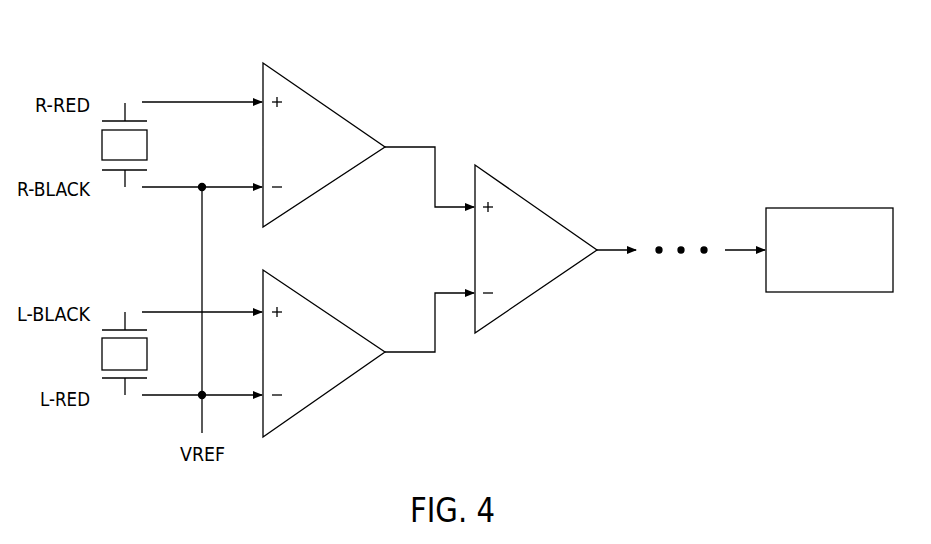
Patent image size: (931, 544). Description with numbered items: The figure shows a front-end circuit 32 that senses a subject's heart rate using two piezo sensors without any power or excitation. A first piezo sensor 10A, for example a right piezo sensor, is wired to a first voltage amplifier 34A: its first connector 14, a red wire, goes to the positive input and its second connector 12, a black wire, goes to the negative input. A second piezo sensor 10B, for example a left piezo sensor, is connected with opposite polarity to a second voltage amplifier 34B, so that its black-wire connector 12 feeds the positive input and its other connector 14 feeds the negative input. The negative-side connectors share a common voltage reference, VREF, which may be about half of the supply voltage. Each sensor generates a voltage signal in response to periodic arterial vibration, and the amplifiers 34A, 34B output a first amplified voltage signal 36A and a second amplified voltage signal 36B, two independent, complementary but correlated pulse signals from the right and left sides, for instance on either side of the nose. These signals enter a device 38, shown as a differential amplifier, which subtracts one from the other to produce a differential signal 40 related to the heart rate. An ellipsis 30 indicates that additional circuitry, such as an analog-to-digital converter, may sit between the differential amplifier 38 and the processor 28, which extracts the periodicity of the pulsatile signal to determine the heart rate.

The first piezo sensor 10A is at (100, 146).
The second piezo sensor 10B is at (100, 354).
The second connector 12 is at (187, 189).
The first connector 14 is at (188, 101).
The processor 28 is at (830, 208).
The ellipsis 30 is at (682, 245).
The front-end circuit 32 is at (796, 98).
The first voltage amplifier 34A is at (325, 106).
The second voltage amplifier 34B is at (325, 312).
The first amplified voltage signal 36A is at (405, 146).
The second amplified voltage signal 36B is at (405, 354).
The device 38 is at (535, 207).
The differential signal 40 is at (610, 252).